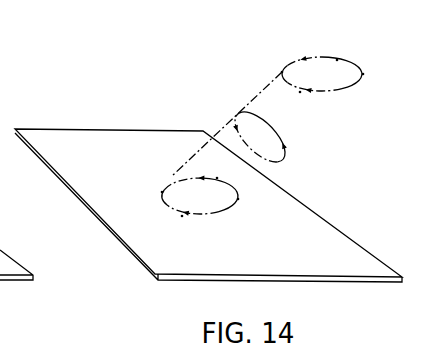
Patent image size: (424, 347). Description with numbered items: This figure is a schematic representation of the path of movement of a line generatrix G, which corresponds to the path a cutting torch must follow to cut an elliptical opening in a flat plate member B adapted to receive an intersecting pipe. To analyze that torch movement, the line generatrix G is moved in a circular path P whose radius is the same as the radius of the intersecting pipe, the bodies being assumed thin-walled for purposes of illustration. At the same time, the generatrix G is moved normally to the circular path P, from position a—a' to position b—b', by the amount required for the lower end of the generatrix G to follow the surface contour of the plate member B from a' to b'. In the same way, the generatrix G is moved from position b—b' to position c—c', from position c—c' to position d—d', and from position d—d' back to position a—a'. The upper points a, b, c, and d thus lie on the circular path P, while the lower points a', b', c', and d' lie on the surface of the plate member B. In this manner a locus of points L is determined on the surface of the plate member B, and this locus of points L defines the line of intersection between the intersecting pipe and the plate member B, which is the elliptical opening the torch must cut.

The plate member B is at (63, 165).
The line generatrix G is at (228, 123).
The circular path P is at (283, 152).
The locus of points L is at (217, 215).
The position a is at (249, 58).
The position b is at (319, 114).
The position c is at (381, 73).
The position d is at (332, 38).
The position a' is at (130, 186).
The position b' is at (163, 232).
The position c' is at (256, 215).
The position d' is at (213, 162).